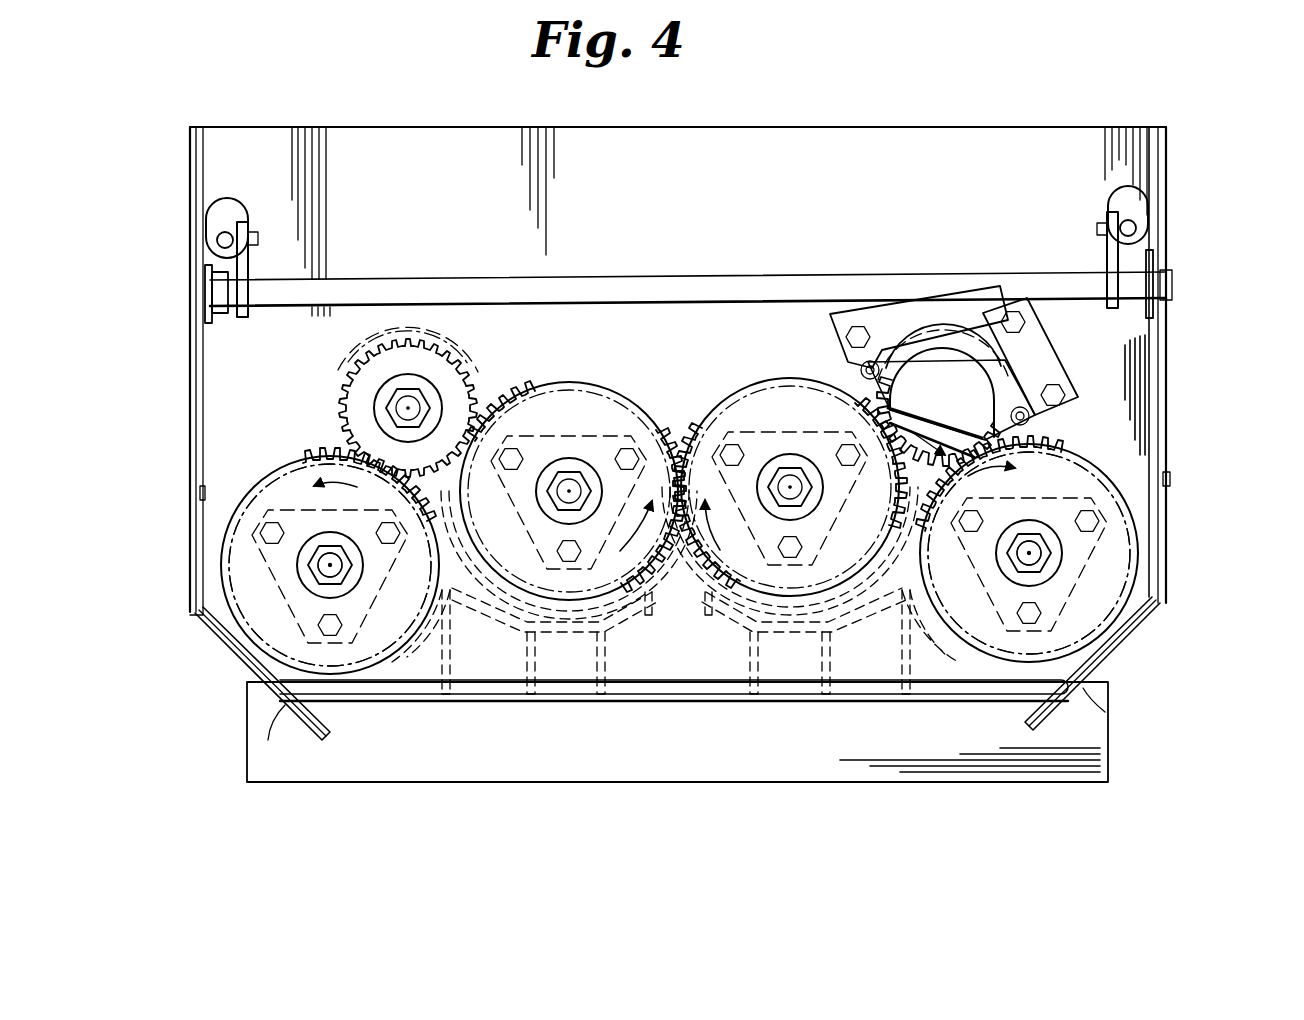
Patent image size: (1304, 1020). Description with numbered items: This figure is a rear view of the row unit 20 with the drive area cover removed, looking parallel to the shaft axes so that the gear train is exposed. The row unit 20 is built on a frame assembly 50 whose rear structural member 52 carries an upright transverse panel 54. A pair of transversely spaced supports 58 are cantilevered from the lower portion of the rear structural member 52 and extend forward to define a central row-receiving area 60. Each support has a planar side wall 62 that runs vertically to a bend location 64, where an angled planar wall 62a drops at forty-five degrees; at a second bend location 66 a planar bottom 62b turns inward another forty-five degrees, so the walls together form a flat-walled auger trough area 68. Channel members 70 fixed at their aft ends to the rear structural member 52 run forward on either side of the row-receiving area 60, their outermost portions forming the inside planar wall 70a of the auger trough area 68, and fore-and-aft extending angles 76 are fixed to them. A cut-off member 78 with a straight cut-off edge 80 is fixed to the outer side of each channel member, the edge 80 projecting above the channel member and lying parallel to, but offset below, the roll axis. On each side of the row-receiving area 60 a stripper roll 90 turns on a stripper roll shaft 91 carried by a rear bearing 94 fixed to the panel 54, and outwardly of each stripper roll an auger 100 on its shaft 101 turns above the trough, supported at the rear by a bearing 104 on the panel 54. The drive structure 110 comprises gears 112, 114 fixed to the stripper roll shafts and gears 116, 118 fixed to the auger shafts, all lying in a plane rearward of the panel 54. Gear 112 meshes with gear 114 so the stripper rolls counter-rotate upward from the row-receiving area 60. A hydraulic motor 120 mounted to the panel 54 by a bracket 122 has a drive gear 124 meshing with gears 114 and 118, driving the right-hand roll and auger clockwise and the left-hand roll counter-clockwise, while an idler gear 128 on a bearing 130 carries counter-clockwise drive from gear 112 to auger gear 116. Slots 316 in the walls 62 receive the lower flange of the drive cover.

The row unit 20 is at (168, 150).
The frame assembly 50 is at (1148, 638).
The rear structural member 52 is at (1167, 505).
The upright transverse panel 54 is at (838, 155).
The supports 58 is at (423, 735).
The row-receiving area 60 is at (680, 600).
The planar side wall 62 is at (190, 356).
The angled planar wall 62a is at (230, 652).
The planar bottom 62b is at (335, 735).
The bend location 64 is at (205, 617).
The second bend location 66 is at (1138, 706).
The auger trough area 68 is at (395, 703).
The channel members 70 is at (598, 705).
The inside planar wall 70a is at (445, 705).
The fore-and-aft extending angles 76 is at (690, 560).
The cut-off member 78 is at (452, 600).
The cut-off edge 80 is at (679, 548).
The stripper roll 90 is at (700, 386).
The stripper roll shaft 91 is at (567, 491).
The rear bearing 94 is at (586, 452).
The auger 100 is at (256, 488).
The auger shaft 101 is at (334, 565).
The rear bearing 104 is at (330, 565).
The stripper roll and auger drive structure 110 is at (798, 343).
The gear 112 is at (575, 400).
The gear 114 is at (760, 460).
The gear 116 is at (300, 455).
The gear 118 is at (1070, 478).
The hydraulic motor 120 is at (955, 335).
The bracket 122 is at (890, 320).
The drive gear 124 is at (912, 425).
The idler gear 128 is at (372, 358).
The bearing 130 is at (412, 400).
The slots 316 is at (200, 491).